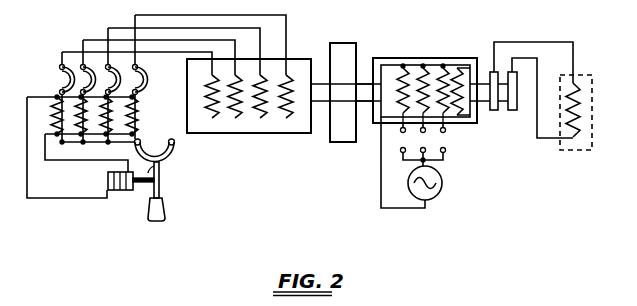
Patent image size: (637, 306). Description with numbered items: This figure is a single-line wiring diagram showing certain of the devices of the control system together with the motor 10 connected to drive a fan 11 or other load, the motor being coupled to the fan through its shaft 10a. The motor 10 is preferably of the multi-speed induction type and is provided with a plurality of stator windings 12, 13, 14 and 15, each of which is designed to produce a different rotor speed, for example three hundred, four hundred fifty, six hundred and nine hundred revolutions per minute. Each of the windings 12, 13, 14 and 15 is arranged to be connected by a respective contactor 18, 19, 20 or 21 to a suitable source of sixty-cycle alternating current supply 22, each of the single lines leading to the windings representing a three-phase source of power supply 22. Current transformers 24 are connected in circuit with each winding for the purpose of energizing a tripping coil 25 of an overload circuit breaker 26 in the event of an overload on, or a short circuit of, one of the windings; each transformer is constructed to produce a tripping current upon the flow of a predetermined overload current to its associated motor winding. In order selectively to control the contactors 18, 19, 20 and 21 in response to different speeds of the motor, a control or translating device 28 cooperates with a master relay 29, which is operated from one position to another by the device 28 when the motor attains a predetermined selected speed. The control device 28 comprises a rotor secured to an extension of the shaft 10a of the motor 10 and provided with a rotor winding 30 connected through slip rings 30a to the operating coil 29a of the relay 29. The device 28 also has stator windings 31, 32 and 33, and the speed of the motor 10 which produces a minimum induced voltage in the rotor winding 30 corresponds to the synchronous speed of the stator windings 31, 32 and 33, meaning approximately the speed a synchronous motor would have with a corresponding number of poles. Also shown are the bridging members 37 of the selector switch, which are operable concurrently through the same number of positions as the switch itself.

The motor 10 is at (255, 133).
The shaft 10a is at (366, 82).
The fan 11 is at (347, 50).
The stator winding 12 is at (216, 104).
The stator winding 13 is at (240, 104).
The stator winding 14 is at (265, 104).
The stator winding 15 is at (290, 104).
The contactor 18 is at (62, 80).
The contactor 19 is at (86, 80).
The contactor 20 is at (110, 80).
The contactor 21 is at (138, 80).
The alternating current supply 22 is at (176, 140).
The current transformers 24 is at (141, 108).
The tripping coil 25 is at (107, 179).
The overload circuit breaker 26 is at (172, 157).
The control device 28 is at (460, 57).
The master relay 29 is at (593, 88).
The operating coil 29a is at (590, 121).
The rotor winding 30 is at (468, 120).
The slip rings 30a is at (492, 111).
The stator winding 31 is at (402, 65).
The stator winding 32 is at (422, 65).
The stator winding 33 is at (442, 65).
The bridging members 37 is at (457, 152).